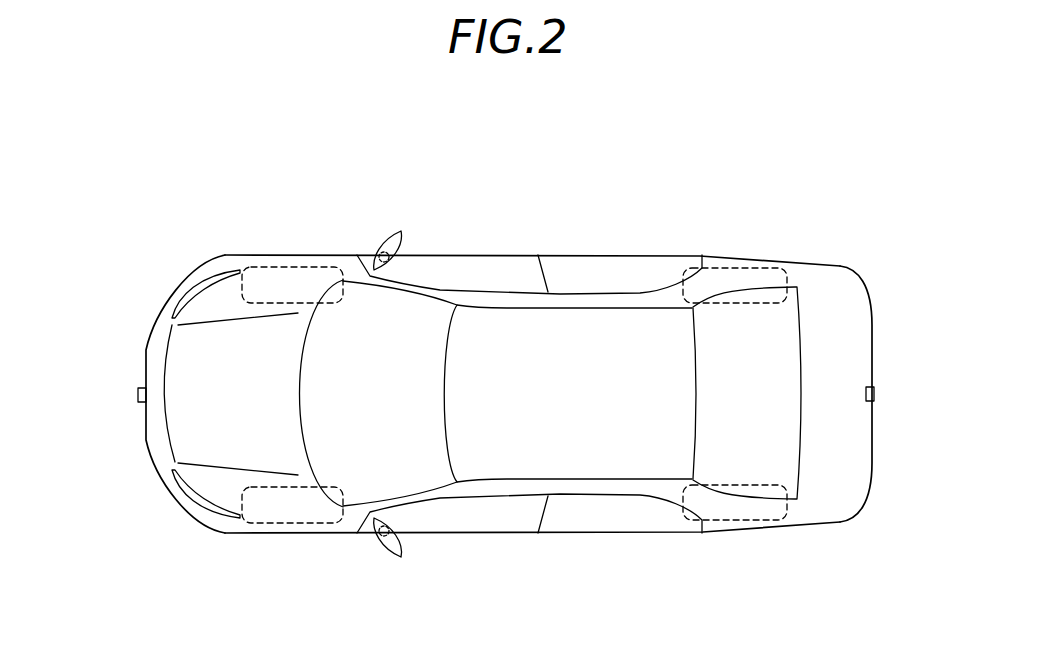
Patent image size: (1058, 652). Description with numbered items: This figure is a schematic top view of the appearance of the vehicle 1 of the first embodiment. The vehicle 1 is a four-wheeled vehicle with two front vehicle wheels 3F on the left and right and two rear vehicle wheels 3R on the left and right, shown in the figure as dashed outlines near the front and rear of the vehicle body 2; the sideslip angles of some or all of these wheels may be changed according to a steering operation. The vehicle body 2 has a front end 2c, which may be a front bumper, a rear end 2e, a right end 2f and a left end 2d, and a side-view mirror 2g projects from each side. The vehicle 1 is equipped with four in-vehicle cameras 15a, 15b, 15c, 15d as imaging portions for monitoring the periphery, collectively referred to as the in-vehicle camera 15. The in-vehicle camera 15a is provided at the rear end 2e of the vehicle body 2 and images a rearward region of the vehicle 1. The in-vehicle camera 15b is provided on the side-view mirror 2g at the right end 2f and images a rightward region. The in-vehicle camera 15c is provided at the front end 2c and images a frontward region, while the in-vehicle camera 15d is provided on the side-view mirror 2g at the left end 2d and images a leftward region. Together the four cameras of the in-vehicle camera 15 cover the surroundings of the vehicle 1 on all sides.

The vehicle 1 is at (603, 181).
The vehicle body 2 is at (813, 256).
The front end 2c is at (146, 437).
The left end 2d is at (620, 534).
The rear end 2e is at (874, 417).
The right end 2f is at (632, 255).
The side-view mirror 2g is at (402, 232).
The front vehicle wheels 3F is at (290, 267).
The rear vehicle wheels 3R is at (727, 268).
The in-vehicle camera 15 is at (502, 406).
The in-vehicle camera 15a is at (138, 395).
The in-vehicle camera 15b is at (875, 393).
The in-vehicle camera 15c is at (382, 556).
The in-vehicle camera 15d is at (387, 232).